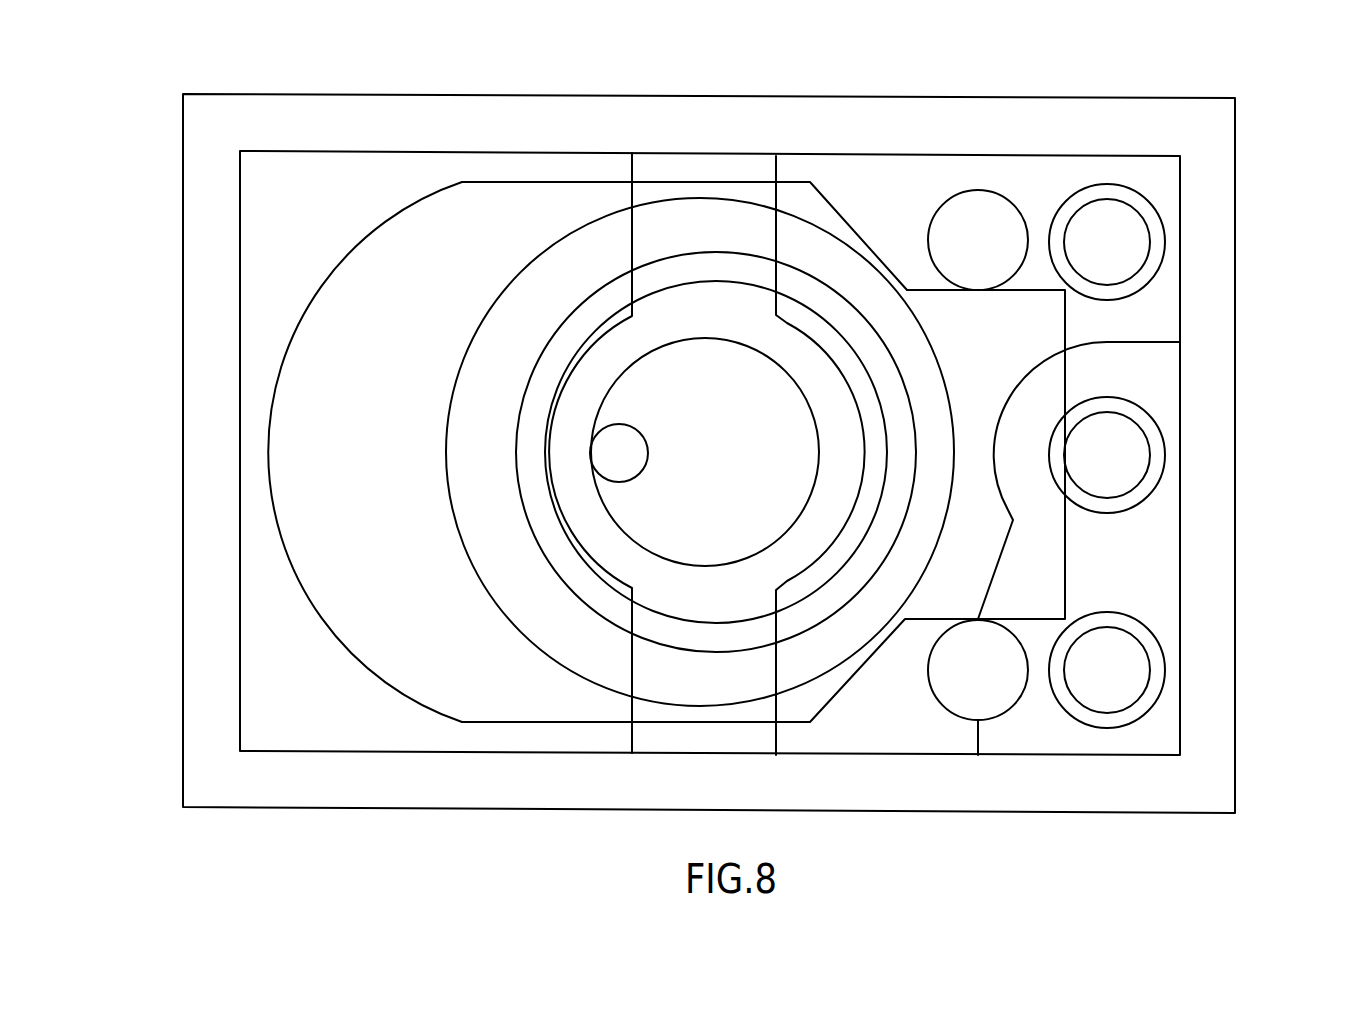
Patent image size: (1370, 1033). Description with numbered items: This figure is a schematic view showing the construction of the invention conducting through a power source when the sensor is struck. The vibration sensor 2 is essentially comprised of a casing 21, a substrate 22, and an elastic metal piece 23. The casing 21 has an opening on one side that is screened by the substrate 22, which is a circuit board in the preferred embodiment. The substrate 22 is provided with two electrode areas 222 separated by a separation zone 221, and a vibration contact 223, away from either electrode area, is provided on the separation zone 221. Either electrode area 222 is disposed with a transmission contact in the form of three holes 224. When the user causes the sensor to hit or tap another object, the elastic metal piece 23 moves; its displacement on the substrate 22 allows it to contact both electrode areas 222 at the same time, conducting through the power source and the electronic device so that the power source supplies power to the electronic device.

The vibration sensor 2 is at (1252, 322).
The casing 21 is at (1222, 552).
The substrate 22 is at (233, 246).
The separation zone 221 is at (763, 162).
The electrode areas 222 is at (578, 162).
The vibration contact 223 is at (733, 547).
The holes 224 is at (1143, 686).
The elastic metal piece 23 is at (720, 208).